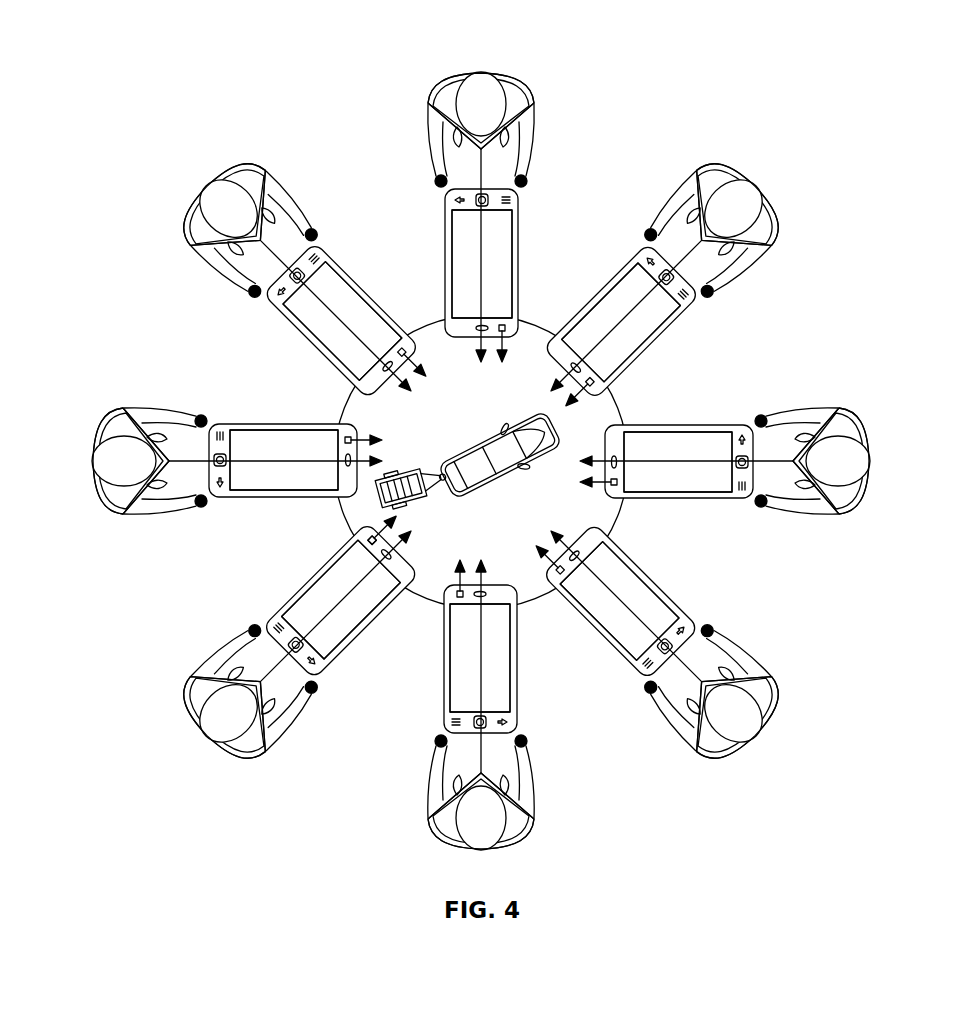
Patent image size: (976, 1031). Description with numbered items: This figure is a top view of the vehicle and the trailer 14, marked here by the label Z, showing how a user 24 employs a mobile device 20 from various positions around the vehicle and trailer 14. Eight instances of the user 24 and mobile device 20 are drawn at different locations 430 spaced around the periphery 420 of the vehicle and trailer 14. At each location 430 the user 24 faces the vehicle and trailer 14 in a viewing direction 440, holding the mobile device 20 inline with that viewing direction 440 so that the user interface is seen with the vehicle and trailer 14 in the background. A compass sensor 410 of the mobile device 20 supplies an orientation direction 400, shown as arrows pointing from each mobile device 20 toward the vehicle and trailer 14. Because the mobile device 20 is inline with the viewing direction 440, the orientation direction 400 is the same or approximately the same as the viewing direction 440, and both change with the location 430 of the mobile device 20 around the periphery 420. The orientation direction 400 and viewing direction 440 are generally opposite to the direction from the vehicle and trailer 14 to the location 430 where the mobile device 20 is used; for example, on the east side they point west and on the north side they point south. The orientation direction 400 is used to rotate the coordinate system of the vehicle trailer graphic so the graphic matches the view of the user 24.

The trailer 14 is at (413, 472).
The mobile device 20 is at (521, 238).
The user 24 is at (445, 97).
The orientation direction 400 is at (502, 363).
The compass sensor 410 is at (509, 331).
The periphery 420 is at (350, 534).
The location 430 is at (488, 70).
The viewing direction 440 is at (481, 251).
The vehicle Z is at (497, 432).